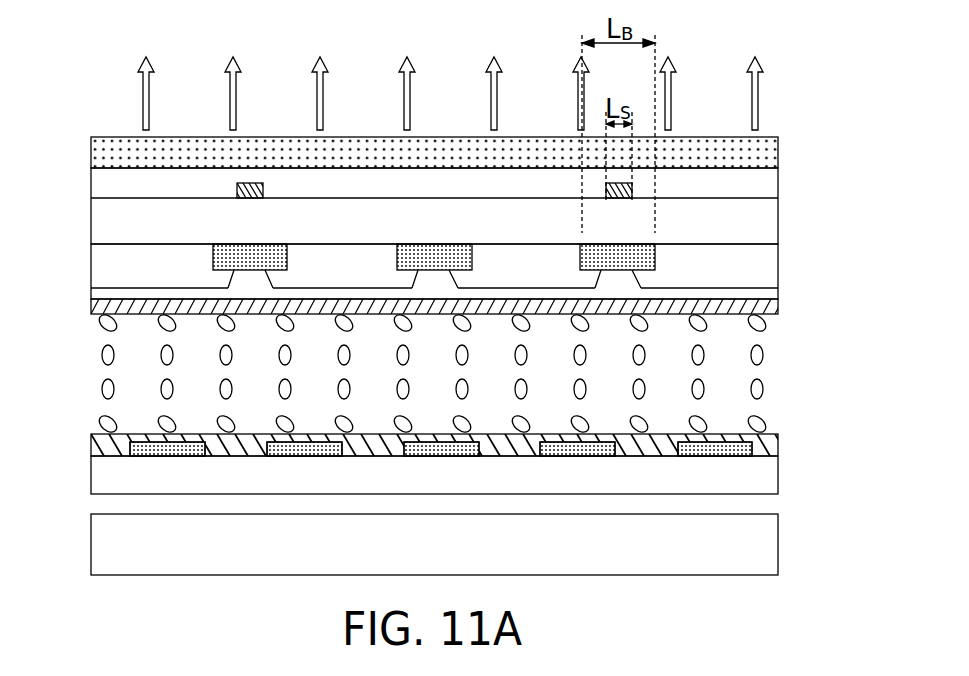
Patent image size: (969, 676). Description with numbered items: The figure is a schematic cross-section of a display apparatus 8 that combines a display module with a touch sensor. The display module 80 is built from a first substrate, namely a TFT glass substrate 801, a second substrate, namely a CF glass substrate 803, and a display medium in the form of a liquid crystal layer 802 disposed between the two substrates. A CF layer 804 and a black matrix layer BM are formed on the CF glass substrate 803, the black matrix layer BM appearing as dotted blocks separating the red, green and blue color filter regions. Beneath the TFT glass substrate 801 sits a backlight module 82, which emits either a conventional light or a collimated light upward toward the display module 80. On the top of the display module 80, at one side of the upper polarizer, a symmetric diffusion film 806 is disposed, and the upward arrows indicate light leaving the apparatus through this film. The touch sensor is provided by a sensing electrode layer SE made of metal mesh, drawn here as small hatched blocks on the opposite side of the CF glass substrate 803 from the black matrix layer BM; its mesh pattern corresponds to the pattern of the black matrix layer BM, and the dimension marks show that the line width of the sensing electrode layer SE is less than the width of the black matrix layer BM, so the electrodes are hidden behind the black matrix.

The display apparatus 8 is at (39, 36).
The display module 80 is at (78, 168).
The backlight module 82 is at (103, 549).
The TFT glass substrate 801 is at (765, 472).
The liquid crystal layer 802 is at (782, 315).
The CF glass substrate 803 is at (765, 219).
The CF layer 804 is at (765, 262).
The symmetric diffusion film 806 is at (767, 152).
The black matrix layer BM is at (232, 256).
The sensing electrode layer SE is at (248, 172).